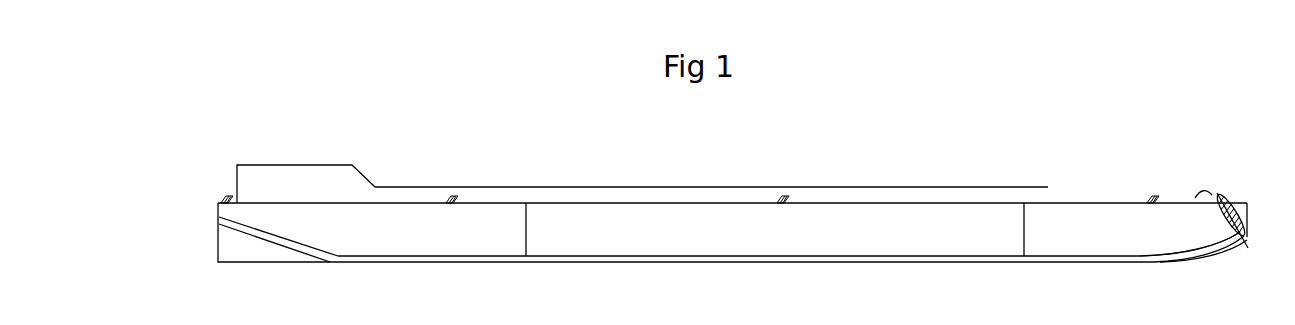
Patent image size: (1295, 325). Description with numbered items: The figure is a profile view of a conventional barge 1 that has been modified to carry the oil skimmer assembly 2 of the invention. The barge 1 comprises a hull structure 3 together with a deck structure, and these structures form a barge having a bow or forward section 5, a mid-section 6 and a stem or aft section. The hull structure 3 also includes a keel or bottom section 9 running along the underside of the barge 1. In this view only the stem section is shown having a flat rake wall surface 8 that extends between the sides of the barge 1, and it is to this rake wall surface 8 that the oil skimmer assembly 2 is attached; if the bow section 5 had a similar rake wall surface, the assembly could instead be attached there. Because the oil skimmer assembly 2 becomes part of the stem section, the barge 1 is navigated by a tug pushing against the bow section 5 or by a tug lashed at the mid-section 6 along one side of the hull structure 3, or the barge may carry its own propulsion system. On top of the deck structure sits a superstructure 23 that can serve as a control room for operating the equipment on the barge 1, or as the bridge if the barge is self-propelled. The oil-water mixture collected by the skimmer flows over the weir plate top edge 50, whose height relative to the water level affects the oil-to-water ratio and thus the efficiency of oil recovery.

The barge 1 is at (632, 170).
The oil skimmer assembly 2 is at (214, 245).
The hull structure 3 is at (490, 243).
The bow or forward section 5 is at (1230, 190).
The mid-section 6 is at (805, 324).
The rake wall surface 8 is at (278, 248).
The keel or bottom section 9 is at (688, 262).
The superstructure 23 is at (298, 162).
The weir plate top edge 50 is at (1093, 323).